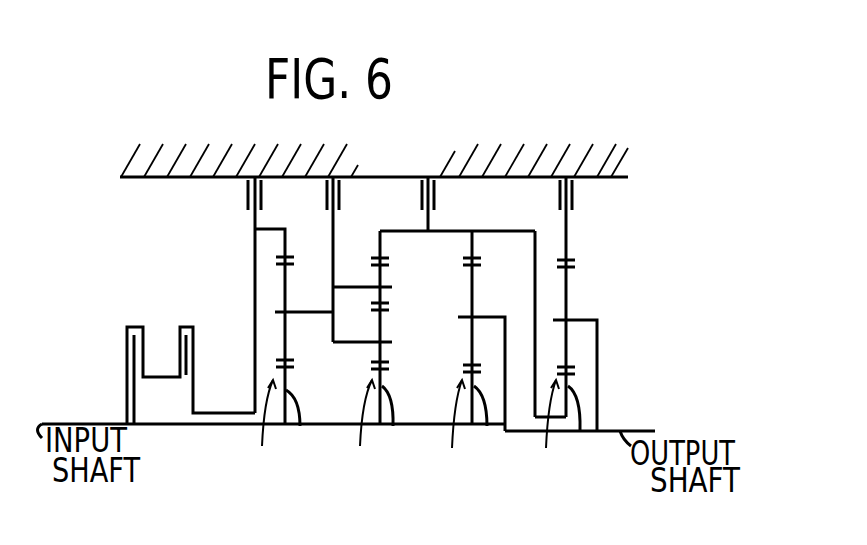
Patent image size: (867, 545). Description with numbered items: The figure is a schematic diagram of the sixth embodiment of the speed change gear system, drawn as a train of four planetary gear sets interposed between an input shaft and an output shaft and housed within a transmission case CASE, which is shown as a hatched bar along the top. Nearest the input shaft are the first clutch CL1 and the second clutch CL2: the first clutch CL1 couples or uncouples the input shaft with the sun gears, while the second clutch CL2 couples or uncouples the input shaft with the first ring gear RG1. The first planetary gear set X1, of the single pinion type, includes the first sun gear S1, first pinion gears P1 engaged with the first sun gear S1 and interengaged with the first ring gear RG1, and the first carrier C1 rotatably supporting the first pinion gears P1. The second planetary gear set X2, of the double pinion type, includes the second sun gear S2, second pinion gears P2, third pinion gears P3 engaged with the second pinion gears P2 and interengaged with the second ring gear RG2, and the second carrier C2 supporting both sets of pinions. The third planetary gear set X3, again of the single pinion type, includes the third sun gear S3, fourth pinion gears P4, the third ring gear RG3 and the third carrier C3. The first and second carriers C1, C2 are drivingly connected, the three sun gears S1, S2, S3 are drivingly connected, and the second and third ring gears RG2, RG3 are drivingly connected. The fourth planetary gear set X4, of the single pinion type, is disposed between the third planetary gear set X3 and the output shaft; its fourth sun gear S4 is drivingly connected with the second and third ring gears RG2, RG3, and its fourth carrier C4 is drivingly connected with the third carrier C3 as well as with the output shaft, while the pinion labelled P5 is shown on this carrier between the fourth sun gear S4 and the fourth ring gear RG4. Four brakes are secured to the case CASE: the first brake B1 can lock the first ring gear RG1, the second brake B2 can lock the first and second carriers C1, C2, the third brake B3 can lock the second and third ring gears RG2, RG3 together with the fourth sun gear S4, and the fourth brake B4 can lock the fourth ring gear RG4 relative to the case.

The case CASE is at (374, 160).
The first clutch CL1 is at (135, 358).
The second clutch CL2 is at (208, 353).
The first brake B1 is at (234, 295).
The second brake B2 is at (318, 259).
The third brake B3 is at (443, 204).
The fourth brake B4 is at (585, 297).
The first ring gear RG1 is at (285, 247).
The second ring gear RG2 is at (380, 244).
The third ring gear RG3 is at (472, 248).
The fourth ring gear RG4 is at (566, 251).
The first carrier C1 is at (310, 312).
The second carrier C2 is at (353, 290).
The third carrier C3 is at (490, 317).
The fourth carrier C4 is at (586, 320).
The first pinion gears P1 is at (287, 349).
The second pinion gears P2 is at (383, 354).
The third pinion gears P3 is at (385, 297).
The fourth pinion gears P4 is at (472, 335).
The fifth planet gear P5 is at (566, 347).
The first sun gear S1 is at (304, 426).
The second sun gear S2 is at (400, 426).
The third sun gear S3 is at (491, 427).
The fourth sun gear S4 is at (587, 428).
The first planetary gear set X1 is at (265, 429).
The second planetary gear set X2 is at (365, 431).
The third planetary gear set X3 is at (462, 433).
The fourth planetary gear set X4 is at (556, 433).